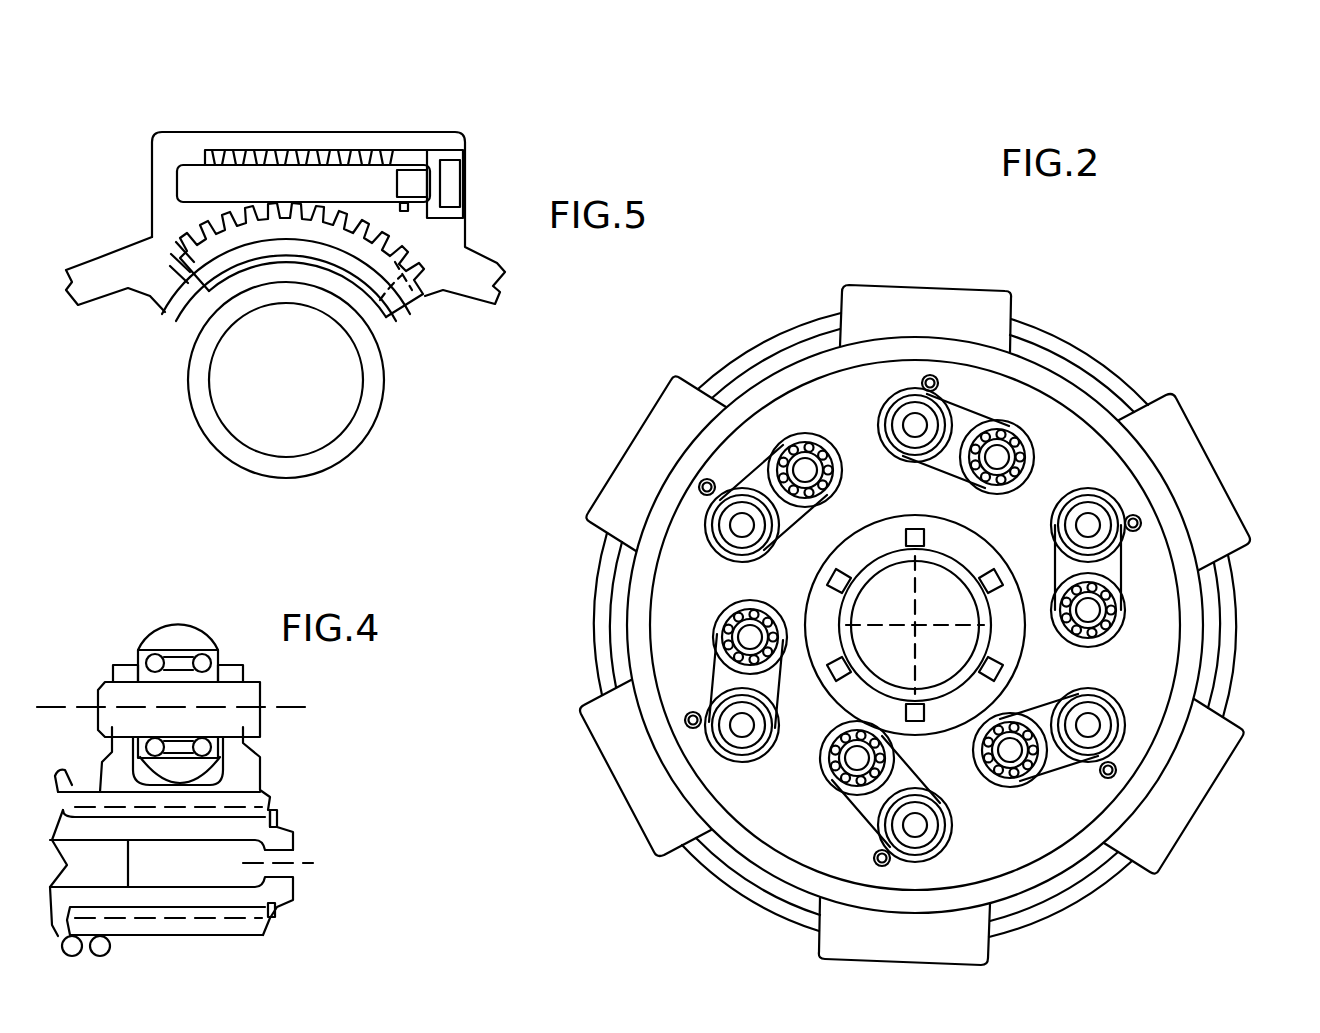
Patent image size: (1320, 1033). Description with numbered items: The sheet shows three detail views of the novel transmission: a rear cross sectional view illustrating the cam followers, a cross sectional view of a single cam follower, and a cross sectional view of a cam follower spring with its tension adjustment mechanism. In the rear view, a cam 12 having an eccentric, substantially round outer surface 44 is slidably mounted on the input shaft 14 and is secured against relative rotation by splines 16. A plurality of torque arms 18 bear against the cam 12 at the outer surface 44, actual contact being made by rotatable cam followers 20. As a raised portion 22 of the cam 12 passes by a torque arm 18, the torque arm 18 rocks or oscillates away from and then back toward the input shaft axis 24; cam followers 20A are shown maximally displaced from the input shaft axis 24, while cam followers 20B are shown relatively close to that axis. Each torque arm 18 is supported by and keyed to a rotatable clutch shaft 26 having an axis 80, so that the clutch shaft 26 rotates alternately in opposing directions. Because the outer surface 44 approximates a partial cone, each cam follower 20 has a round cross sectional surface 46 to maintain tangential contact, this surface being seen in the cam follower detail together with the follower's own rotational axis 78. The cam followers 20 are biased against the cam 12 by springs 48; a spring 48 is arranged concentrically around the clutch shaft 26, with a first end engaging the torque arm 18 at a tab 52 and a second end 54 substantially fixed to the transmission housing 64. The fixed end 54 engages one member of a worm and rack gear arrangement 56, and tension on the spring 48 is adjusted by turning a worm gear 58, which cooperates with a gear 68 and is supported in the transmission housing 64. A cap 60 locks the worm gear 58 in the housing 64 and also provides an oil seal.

In FIG. 2, the cam 12 is at (863, 504).
In FIG. 2, the input shaft 14 is at (959, 607).
In FIG. 2, the splines 16 is at (990, 573).
In FIG. 2, the torque arm 18 is at (768, 475).
In FIG. 4, the torque arm 18 is at (257, 773).
In FIG. 4, the cam follower 20 is at (192, 643).
In FIG. 2, the cam follower 20A is at (1020, 425).
In FIG. 2, the cam follower 20B is at (712, 632).
In FIG. 2, the raised portion 22 is at (862, 470).
In FIG. 2, the input shaft axis 24 is at (912, 625).
In FIG. 2, the clutch shaft 26 is at (1082, 508).
In FIG. 4, the clutch shaft 26 is at (255, 934).
In FIG. 2, the outer surface 44 is at (1052, 665).
In FIG. 4, the round cross sectional surface 46 is at (148, 638).
In FIG. 5, the spring 48 is at (285, 479).
In FIG. 4, the spring 48 is at (108, 948).
In FIG. 2, the tab 52 is at (1138, 516).
In FIG. 5, the second end 54 is at (397, 330).
In FIG. 5, the worm and rack gear arrangement 56 is at (508, 186).
In FIG. 5, the worm gear 58 is at (380, 168).
In FIG. 5, the cap 60 is at (474, 233).
In FIG. 2, the transmission housing 64 is at (725, 883).
In FIG. 5, the transmission housing 64 is at (97, 258).
In FIG. 5, the gear 68 is at (180, 263).
In FIG. 4, the rotational axis 78 is at (67, 705).
In FIG. 4, the axis 80 is at (305, 862).